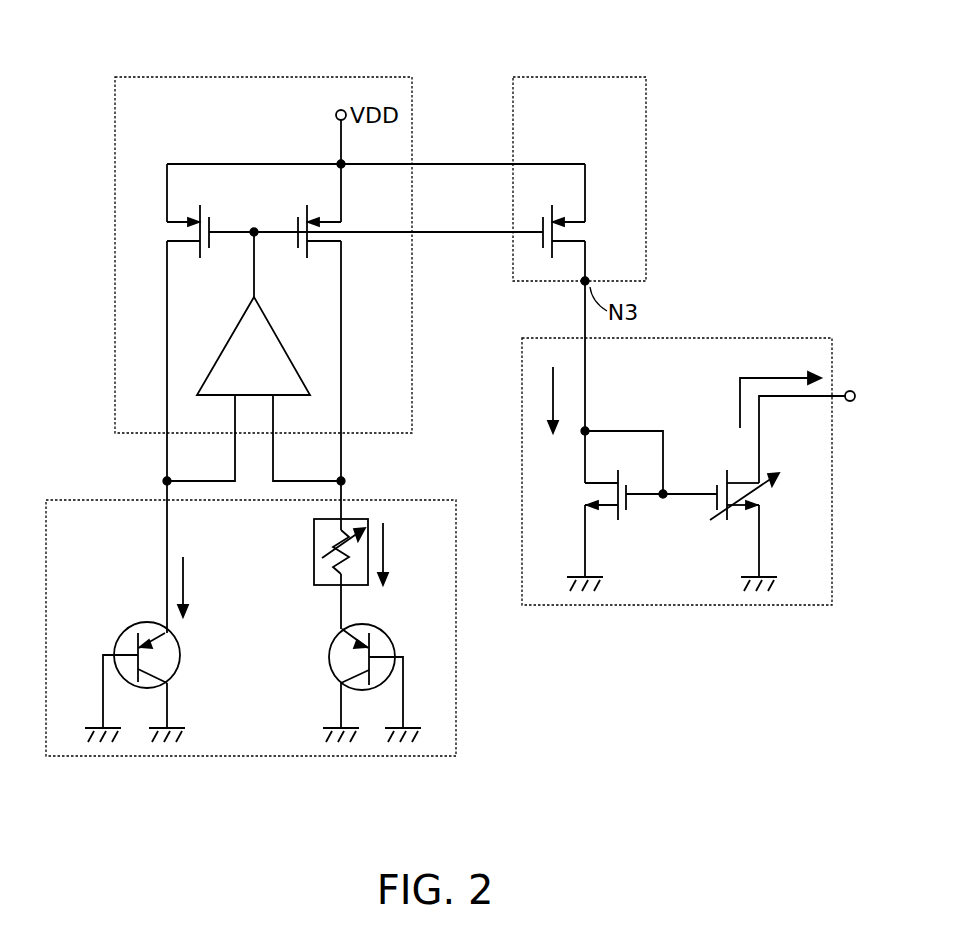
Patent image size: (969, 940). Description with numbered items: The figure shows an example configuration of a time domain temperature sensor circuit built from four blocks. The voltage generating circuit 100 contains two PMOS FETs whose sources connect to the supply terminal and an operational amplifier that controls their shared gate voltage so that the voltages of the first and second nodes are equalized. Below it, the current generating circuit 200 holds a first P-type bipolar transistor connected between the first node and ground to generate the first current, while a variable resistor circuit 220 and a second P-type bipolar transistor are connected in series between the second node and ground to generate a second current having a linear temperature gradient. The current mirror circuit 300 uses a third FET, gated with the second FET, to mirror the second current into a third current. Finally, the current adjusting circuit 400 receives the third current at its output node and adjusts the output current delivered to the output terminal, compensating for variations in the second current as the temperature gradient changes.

The voltage generating circuit 100 is at (366, 77).
The current generating circuit 200 is at (250, 757).
The variable resistor circuit 220 is at (313, 567).
The current mirror circuit 300 is at (600, 77).
The current adjusting circuit 400 is at (792, 338).